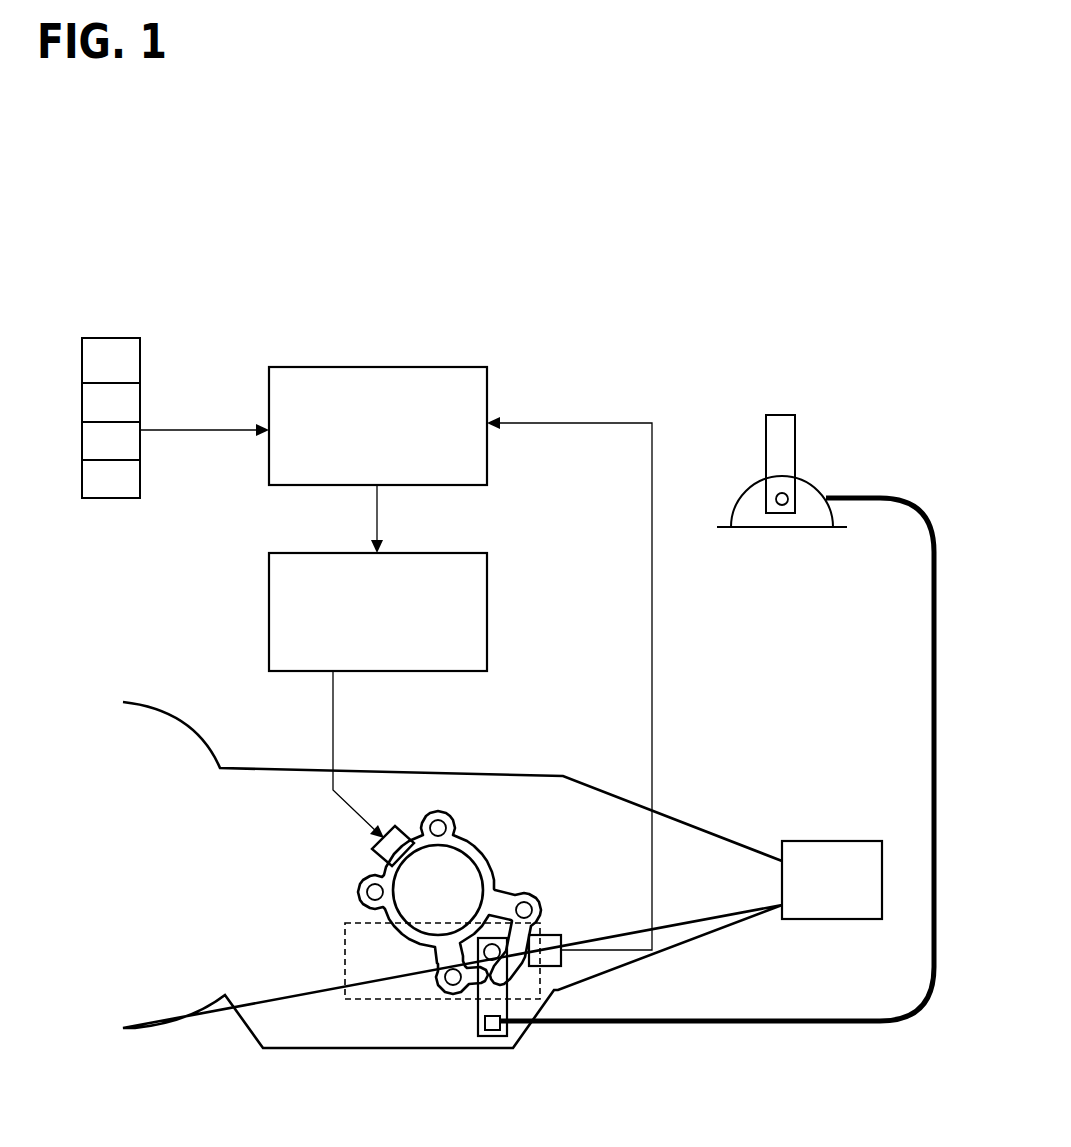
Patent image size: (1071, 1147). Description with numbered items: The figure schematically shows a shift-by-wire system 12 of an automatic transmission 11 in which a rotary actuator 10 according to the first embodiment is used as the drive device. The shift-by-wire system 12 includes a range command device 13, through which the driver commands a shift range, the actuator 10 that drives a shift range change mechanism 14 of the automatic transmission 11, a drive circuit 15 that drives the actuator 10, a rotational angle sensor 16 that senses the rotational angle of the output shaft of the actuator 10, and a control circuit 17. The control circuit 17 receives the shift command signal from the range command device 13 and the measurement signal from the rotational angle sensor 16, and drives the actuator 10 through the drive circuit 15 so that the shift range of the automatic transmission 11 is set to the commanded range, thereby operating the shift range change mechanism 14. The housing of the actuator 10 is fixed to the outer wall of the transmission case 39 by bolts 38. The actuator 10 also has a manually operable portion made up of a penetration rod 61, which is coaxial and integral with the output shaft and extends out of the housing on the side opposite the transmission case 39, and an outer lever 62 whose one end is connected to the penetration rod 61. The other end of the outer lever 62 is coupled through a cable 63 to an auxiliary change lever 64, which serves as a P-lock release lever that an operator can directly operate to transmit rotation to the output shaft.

The rotary actuator 10 is at (435, 890).
The automatic transmission 11 is at (245, 762).
The shift-by-wire system 12 is at (231, 312).
The range command device 13 is at (110, 338).
The shift range change mechanism 14 is at (493, 922).
The drive circuit 15 is at (457, 553).
The rotational angle sensor 16 is at (548, 935).
The control circuit 17 is at (457, 367).
The bolts 38 is at (436, 821).
The transmission case 39 is at (690, 822).
The penetration rod 61 is at (492, 952).
The outer lever 62 is at (490, 990).
The cable 63 is at (675, 1023).
The auxiliary change lever 64 is at (782, 415).